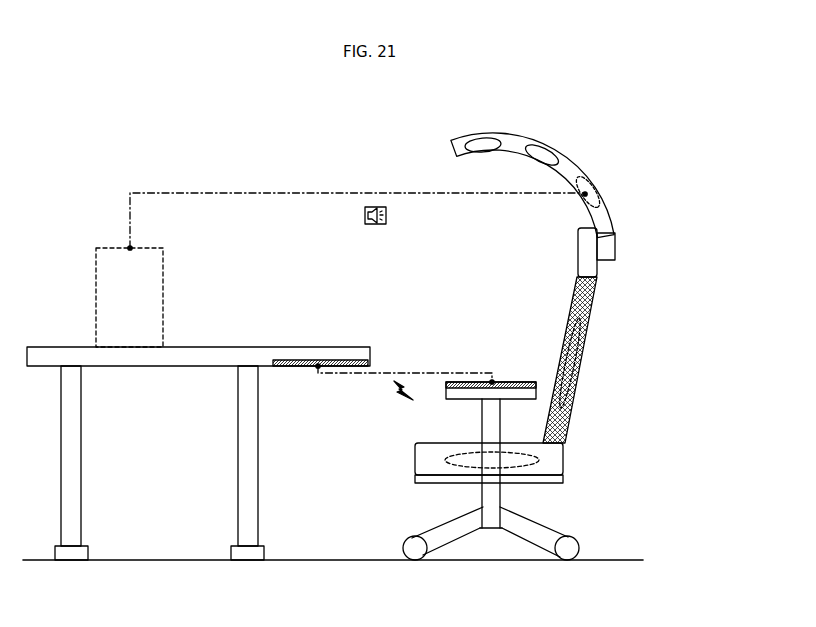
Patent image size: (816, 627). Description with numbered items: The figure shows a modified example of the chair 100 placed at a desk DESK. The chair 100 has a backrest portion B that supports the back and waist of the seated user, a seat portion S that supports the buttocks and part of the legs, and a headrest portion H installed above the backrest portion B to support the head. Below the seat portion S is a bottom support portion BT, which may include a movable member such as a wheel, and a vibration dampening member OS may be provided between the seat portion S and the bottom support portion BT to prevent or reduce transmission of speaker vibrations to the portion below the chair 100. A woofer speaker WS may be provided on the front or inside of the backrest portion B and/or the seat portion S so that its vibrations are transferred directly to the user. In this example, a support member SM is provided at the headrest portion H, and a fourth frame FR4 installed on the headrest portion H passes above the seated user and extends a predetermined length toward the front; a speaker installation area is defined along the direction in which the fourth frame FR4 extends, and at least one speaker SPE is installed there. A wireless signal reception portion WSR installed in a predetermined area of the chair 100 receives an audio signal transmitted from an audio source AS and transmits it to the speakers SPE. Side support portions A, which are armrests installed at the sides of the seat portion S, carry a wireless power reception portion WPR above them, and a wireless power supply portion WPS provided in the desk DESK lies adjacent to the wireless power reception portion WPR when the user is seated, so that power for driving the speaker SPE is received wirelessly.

The chair 100 is at (672, 230).
The desk DESK is at (50, 352).
The audio source AS is at (116, 258).
The wireless power supply portion WPS is at (300, 365).
The speaker SPE is at (450, 150).
The fourth frame FR4 is at (530, 155).
The wireless signal reception portion WSR is at (598, 182).
The support member SM is at (578, 250).
The headrest portion H is at (592, 273).
The woofer speaker WS is at (592, 342).
The wireless power reception portion WPR is at (578, 388).
The side support portion A is at (487, 430).
The backrest portion B is at (575, 428).
The seat portion S is at (560, 455).
The vibration dampening member OS is at (560, 479).
The bottom support portion BT is at (487, 497).